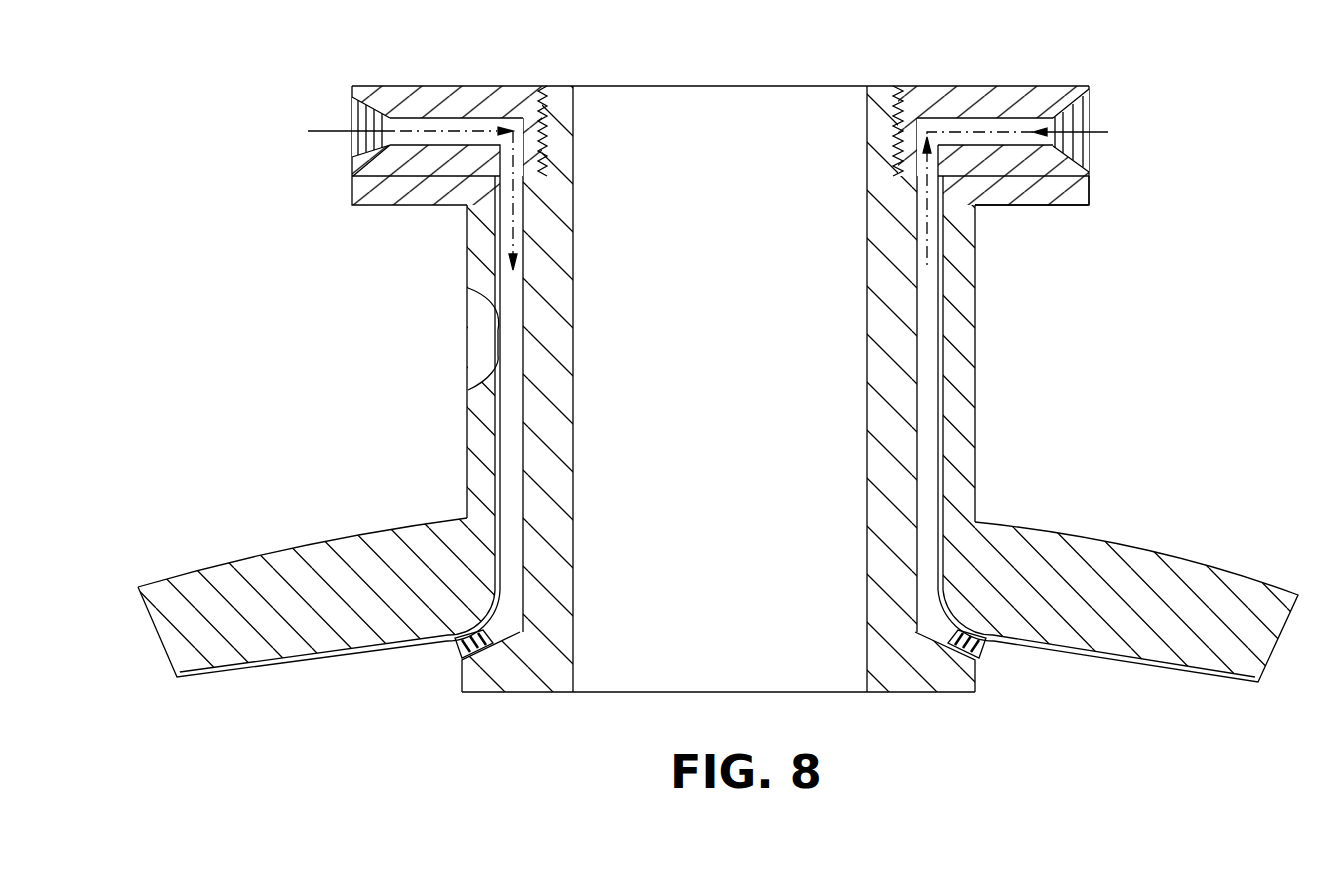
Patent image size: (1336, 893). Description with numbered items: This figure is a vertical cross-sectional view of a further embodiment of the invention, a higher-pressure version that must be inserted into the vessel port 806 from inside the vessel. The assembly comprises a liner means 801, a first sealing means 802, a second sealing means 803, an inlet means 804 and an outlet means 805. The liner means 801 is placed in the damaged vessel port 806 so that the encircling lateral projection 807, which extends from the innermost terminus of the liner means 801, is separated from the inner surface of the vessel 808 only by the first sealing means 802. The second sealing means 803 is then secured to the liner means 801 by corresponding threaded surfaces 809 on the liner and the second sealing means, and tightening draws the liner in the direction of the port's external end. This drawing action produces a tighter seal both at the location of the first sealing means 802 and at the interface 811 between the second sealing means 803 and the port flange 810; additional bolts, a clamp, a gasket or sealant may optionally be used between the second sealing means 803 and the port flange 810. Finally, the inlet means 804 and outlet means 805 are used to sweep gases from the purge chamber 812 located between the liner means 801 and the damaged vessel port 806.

The liner means 801 is at (572, 525).
The first sealing means 802 is at (987, 653).
The second sealing means 803 is at (510, 85).
The inlet means 804 is at (353, 128).
The outlet means 805 is at (1090, 130).
The vessel port 806 is at (498, 332).
The encircling lateral projection 807 is at (522, 692).
The inner surface of the vessel 808 is at (1073, 655).
The threaded surfaces 809 is at (898, 85).
The port flange 810 is at (1070, 202).
The interface 811 is at (1089, 177).
The purge chamber 812 is at (930, 372).